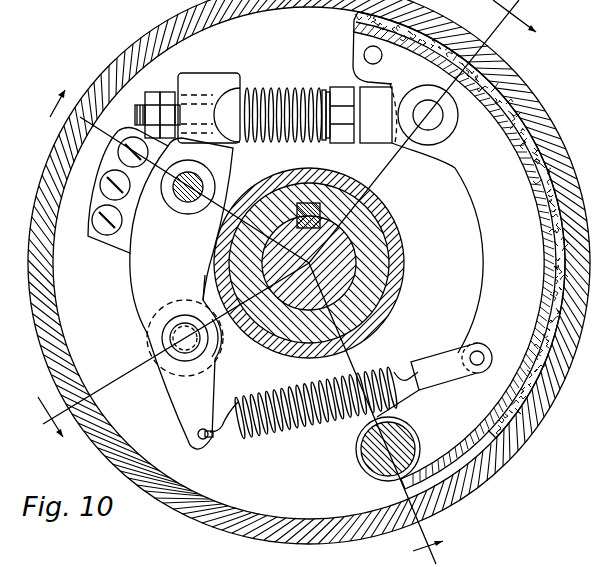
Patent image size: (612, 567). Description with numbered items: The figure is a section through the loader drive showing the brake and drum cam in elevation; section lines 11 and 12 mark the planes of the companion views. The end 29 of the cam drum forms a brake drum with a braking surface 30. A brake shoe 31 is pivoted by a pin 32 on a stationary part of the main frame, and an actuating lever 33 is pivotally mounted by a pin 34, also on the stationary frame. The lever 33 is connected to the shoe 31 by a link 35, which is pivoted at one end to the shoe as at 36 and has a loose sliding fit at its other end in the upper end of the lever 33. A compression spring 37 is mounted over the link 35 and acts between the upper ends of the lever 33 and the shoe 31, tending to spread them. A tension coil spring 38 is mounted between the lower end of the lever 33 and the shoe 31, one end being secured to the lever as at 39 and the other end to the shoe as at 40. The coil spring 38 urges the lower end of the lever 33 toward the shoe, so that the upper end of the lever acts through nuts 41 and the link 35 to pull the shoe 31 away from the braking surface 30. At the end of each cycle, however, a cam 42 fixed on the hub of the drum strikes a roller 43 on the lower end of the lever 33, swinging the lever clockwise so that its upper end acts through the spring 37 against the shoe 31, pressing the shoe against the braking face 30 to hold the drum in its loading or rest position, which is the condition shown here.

The section line 11- 11 is at (294, 233).
The section line 12- 12 is at (256, 316).
The end of cam drum 29 is at (559, 138).
The braking surface 30 is at (291, 0).
The brake shoe 31 is at (500, 277).
The pin 32 is at (376, 464).
The actuating lever 33 is at (138, 288).
The pin 34 is at (200, 183).
The link 35 is at (137, 100).
The pivot of link on shoe 36 is at (433, 122).
The compression spring 37 is at (288, 92).
The tension coil spring 38 is at (271, 441).
The spring attachment on lever 39 is at (196, 432).
The spring attachment on shoe 40 is at (466, 346).
The nuts 41 is at (167, 90).
The cam 42 is at (187, 283).
The roller 43 is at (225, 352).